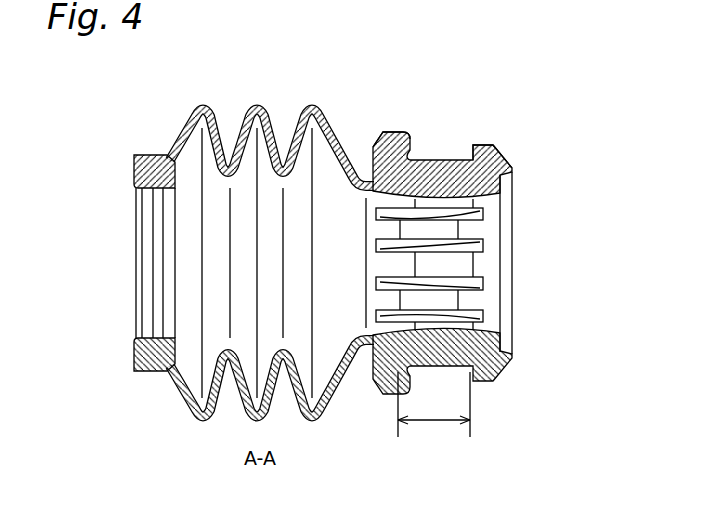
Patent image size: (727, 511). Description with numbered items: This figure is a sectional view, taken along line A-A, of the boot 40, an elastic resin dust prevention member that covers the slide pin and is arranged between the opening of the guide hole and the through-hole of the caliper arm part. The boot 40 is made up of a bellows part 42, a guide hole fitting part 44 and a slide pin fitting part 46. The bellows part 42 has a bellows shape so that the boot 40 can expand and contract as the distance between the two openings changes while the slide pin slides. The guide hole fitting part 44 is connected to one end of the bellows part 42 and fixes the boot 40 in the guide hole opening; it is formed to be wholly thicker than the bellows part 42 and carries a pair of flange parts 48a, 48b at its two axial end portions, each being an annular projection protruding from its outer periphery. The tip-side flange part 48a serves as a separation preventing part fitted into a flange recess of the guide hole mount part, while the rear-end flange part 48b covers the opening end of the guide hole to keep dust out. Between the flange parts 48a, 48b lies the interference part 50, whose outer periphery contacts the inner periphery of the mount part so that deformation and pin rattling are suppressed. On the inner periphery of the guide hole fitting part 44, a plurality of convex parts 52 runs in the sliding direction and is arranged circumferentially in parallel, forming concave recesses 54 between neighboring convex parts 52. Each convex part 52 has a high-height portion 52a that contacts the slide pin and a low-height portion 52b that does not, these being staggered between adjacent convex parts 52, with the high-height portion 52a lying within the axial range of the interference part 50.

The boot 40 is at (265, 229).
The bellows part 42 is at (272, 107).
The guide hole fitting part 44 is at (493, 225).
The slide pin fitting part 46 is at (143, 158).
The flange part 48a is at (488, 148).
The flange part 48b is at (402, 132).
The interference part 50 is at (432, 422).
The convex part 52 is at (478, 216).
The high-height portion 52a is at (487, 227).
The low-height portion 52b is at (395, 230).
The concave recess 54 is at (489, 267).